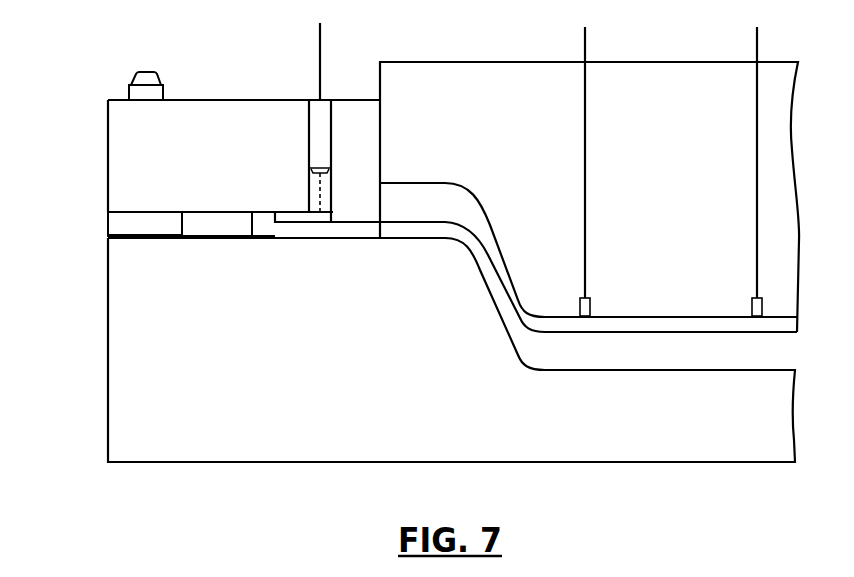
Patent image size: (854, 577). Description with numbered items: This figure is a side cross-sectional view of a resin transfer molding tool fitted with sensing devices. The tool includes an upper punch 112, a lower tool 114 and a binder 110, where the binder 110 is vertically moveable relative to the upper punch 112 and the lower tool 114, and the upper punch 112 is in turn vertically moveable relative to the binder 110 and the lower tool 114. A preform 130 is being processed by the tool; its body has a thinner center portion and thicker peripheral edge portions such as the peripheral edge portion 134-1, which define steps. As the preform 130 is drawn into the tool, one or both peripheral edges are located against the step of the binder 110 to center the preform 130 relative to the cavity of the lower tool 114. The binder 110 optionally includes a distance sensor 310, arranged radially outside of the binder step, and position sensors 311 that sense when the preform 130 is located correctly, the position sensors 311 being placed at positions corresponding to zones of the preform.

The binder 110 is at (108, 150).
The upper punch 112 is at (547, 62).
The lower tool 114 is at (108, 400).
The preform 130 is at (282, 226).
The peripheral edge portion 134-1 is at (262, 215).
The distance sensor 310 is at (316, 138).
The position sensors 311 is at (591, 308).